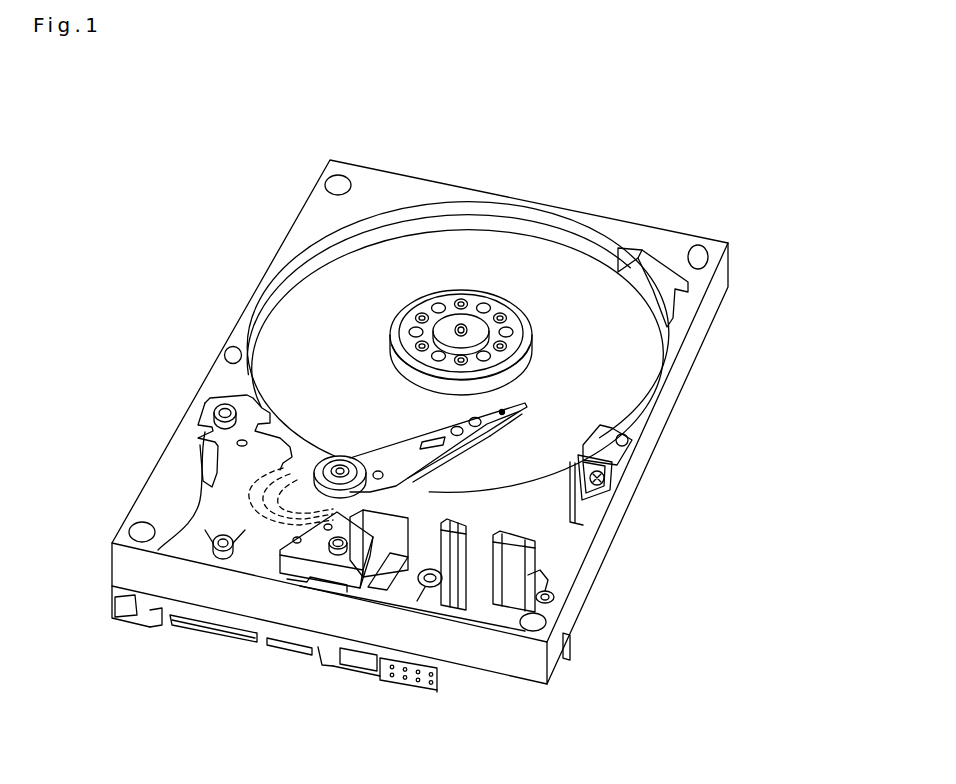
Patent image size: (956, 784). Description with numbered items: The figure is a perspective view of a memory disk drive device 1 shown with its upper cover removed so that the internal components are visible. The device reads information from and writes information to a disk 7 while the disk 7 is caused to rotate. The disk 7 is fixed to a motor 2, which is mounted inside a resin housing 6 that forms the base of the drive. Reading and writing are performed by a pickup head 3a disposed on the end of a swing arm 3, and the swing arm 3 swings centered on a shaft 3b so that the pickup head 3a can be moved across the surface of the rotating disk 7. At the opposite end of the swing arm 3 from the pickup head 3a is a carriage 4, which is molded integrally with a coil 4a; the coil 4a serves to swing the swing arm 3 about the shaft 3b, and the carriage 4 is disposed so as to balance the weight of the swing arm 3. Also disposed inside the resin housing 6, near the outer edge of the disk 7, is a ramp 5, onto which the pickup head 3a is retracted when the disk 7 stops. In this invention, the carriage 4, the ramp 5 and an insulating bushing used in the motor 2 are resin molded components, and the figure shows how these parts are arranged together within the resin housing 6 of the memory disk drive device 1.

The memory disk drive device 1 is at (688, 194).
The motor 2 is at (532, 358).
The swing arm 3 is at (573, 453).
The pickup head 3a is at (527, 406).
The shaft 3b is at (325, 463).
The carriage 4 is at (250, 508).
The coil 4a is at (273, 498).
The ramp 5 is at (548, 504).
The resin housing 6 is at (738, 246).
The disk 7 is at (465, 258).